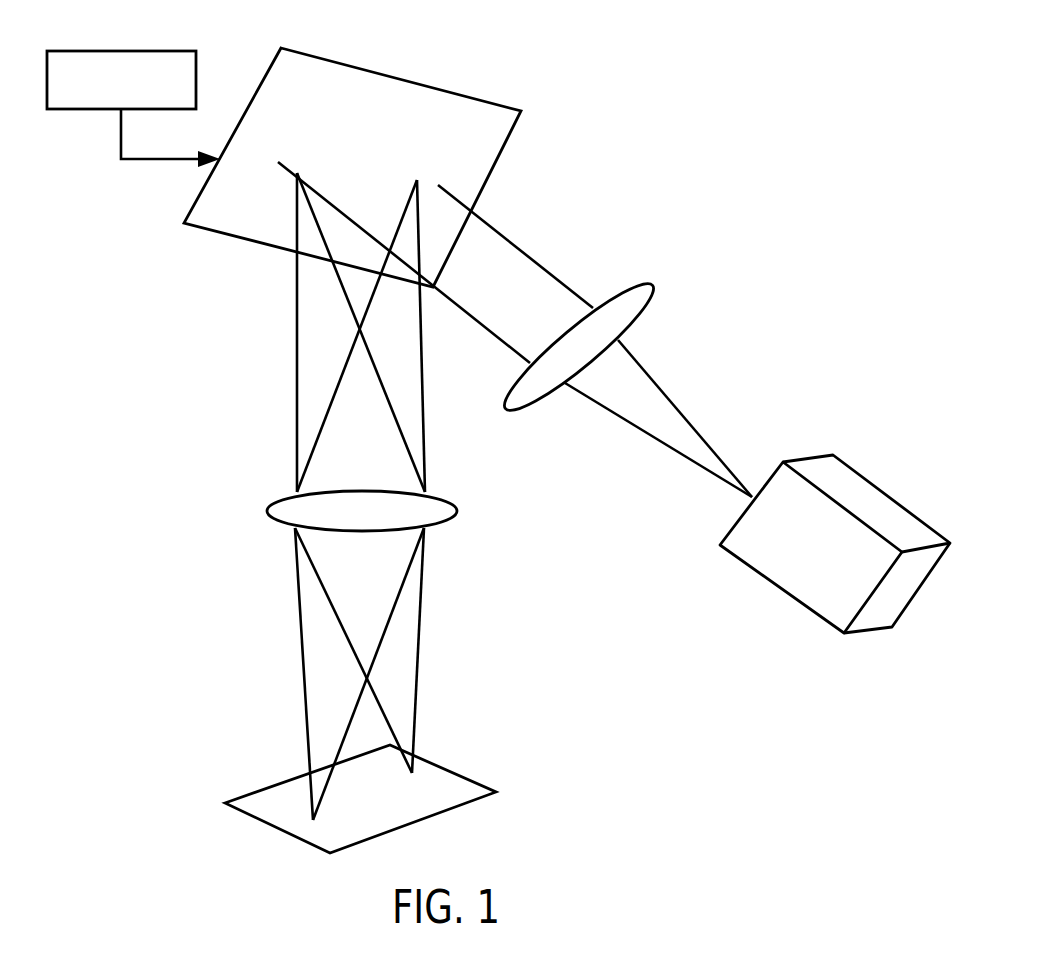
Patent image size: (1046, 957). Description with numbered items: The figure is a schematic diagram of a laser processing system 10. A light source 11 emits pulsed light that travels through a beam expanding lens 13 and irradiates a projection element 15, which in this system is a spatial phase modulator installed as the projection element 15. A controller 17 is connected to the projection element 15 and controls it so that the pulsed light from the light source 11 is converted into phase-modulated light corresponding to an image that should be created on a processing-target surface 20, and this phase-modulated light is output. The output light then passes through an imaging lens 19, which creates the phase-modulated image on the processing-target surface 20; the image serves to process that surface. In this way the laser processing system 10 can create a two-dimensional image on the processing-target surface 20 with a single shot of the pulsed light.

The laser processing system 10 is at (815, 140).
The light source 11 is at (863, 478).
The beam expanding lens 13 is at (653, 287).
The projection element 15 is at (497, 102).
The controller 17 is at (167, 51).
The imaging lens 19 is at (267, 511).
The processing-target surface 20 is at (496, 792).